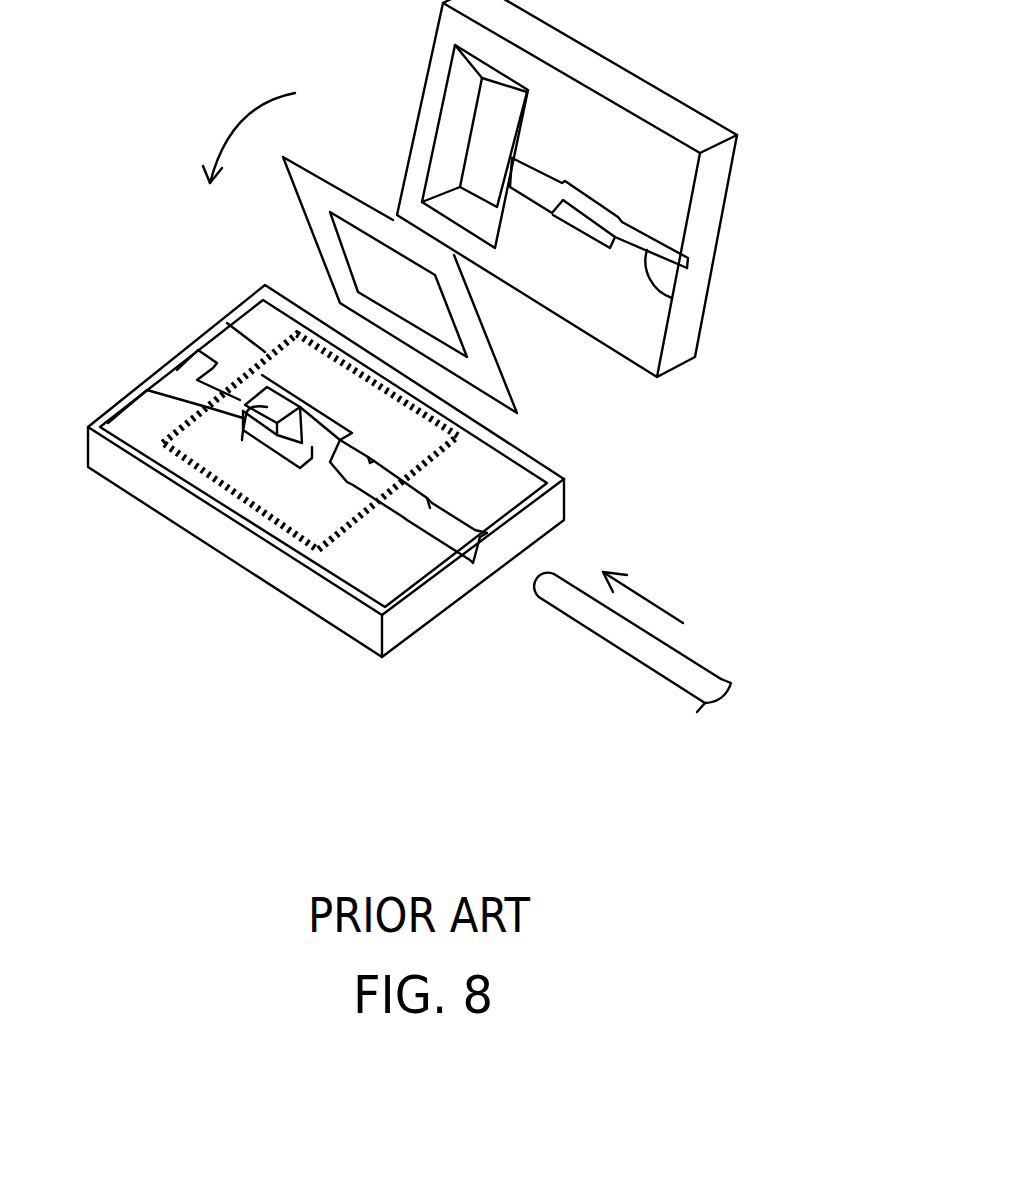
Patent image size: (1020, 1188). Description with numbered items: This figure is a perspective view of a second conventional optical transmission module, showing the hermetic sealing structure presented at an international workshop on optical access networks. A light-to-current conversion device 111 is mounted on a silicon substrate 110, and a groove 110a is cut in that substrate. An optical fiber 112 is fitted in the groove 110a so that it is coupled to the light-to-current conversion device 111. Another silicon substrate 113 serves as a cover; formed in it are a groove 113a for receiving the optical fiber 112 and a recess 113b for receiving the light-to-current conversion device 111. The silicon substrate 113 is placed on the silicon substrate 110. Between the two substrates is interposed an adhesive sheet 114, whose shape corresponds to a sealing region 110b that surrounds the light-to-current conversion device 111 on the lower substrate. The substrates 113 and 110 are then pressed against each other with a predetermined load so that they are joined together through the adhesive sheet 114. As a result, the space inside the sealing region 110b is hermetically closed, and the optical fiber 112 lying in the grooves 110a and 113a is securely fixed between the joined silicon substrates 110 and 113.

The silicon substrate 110 is at (290, 586).
The groove 110a is at (460, 527).
The sealing region 110b is at (195, 466).
The light-to-current conversion device 111 is at (273, 400).
The optical fiber 112 is at (593, 622).
The silicon substrate 113 is at (665, 112).
The groove 113a is at (660, 290).
The recess 113b is at (448, 142).
The adhesive sheet 114 is at (488, 380).